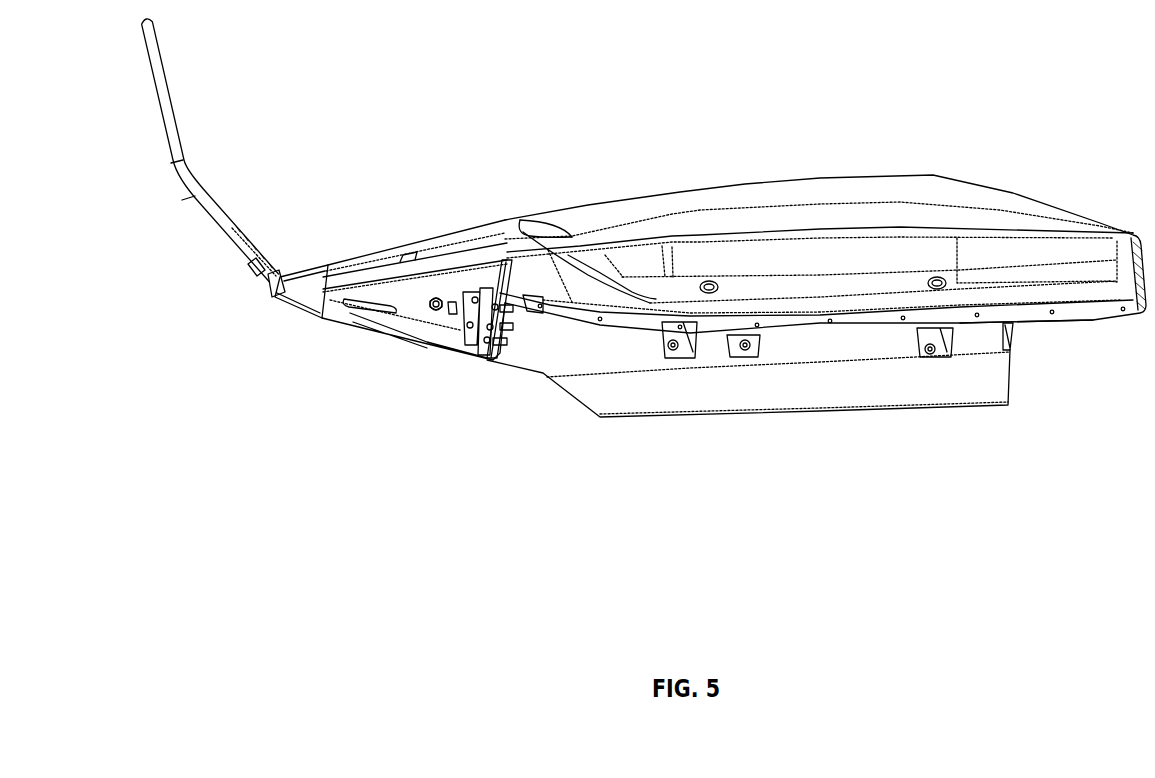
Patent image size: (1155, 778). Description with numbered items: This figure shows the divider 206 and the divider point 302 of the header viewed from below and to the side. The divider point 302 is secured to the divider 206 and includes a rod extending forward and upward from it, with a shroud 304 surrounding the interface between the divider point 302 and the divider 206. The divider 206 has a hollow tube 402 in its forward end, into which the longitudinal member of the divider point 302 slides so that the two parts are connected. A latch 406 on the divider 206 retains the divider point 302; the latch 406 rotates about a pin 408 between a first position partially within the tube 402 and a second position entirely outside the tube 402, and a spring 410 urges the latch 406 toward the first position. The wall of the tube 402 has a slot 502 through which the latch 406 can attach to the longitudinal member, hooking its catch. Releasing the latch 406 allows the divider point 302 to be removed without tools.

The divider 206 is at (740, 184).
The divider point 302 is at (202, 210).
The shroud 304 is at (273, 307).
The tube 402 is at (364, 287).
The latch 406 is at (385, 317).
The pin 408 is at (441, 300).
The spring 410 is at (440, 328).
The slot 502 is at (350, 313).